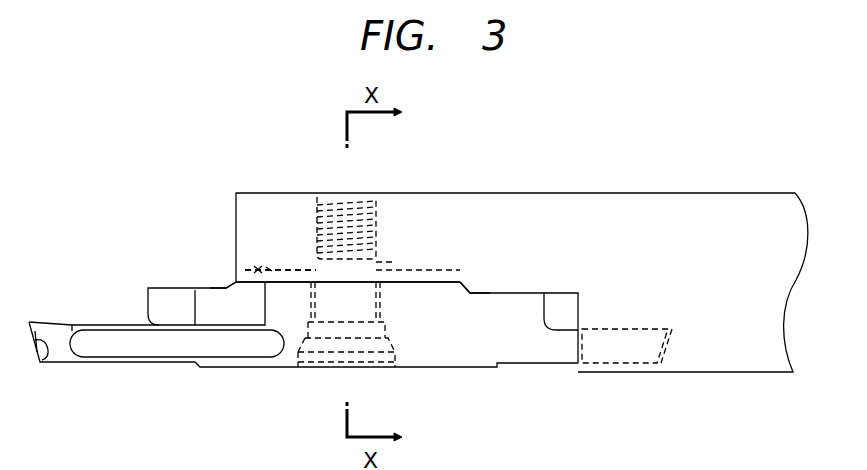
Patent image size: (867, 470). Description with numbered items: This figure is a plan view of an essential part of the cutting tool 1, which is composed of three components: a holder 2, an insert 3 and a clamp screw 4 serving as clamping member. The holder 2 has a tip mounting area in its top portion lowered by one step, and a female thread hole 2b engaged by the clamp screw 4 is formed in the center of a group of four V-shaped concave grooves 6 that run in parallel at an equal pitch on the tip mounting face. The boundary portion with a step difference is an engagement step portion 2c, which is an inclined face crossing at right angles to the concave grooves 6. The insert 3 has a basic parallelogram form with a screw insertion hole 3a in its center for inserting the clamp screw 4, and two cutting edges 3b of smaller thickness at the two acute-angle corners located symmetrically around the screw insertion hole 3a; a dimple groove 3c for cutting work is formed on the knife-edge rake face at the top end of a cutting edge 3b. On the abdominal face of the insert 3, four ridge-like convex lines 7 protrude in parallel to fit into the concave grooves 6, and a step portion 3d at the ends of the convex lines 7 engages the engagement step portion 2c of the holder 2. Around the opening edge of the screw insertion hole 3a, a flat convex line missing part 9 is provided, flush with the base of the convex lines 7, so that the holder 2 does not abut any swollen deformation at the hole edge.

The cutting tool 1 is at (599, 108).
The holder 2 is at (669, 195).
The female thread hole 2b is at (363, 193).
The engagement step portion 2c is at (457, 283).
The insert 3 is at (481, 367).
The screw insertion hole 3a is at (383, 307).
The cutting edge 3b is at (118, 363).
The dimple groove 3c is at (53, 363).
The step portion 3d is at (236, 282).
The clamp screw 4 is at (330, 347).
The concave groove 6 is at (265, 270).
The convex line 7 is at (253, 270).
The convex line missing part 9 is at (383, 268).